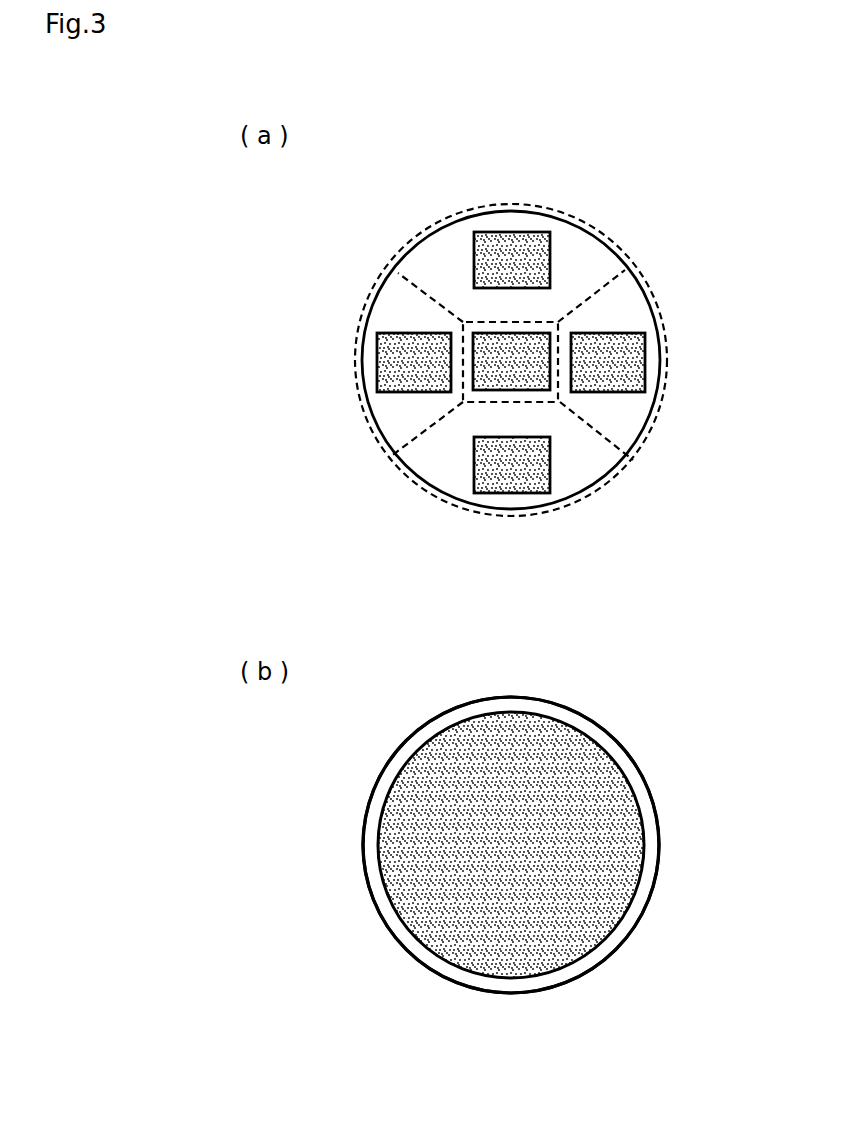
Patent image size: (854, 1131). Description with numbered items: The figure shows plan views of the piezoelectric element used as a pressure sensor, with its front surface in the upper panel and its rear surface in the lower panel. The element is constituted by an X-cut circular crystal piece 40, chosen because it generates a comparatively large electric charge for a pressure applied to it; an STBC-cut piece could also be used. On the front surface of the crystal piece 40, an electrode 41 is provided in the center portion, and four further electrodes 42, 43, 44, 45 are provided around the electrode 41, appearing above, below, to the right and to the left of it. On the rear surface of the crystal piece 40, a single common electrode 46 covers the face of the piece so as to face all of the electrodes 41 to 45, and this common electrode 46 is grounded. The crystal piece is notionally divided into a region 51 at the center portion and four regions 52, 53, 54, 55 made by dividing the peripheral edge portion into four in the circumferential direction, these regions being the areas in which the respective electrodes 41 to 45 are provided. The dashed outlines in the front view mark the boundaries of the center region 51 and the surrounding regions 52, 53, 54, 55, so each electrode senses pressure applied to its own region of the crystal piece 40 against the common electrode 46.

The crystal piece 40 is at (661, 828).
The electrode 41 is at (536, 333).
The electrode 42 is at (505, 232).
The electrode 43 is at (474, 470).
The electrode 44 is at (647, 360).
The electrode 45 is at (377, 363).
The common electrode 46 is at (646, 866).
The region 51 is at (563, 393).
The region 52 is at (432, 253).
The region 53 is at (588, 473).
The region 54 is at (622, 307).
The region 55 is at (388, 417).